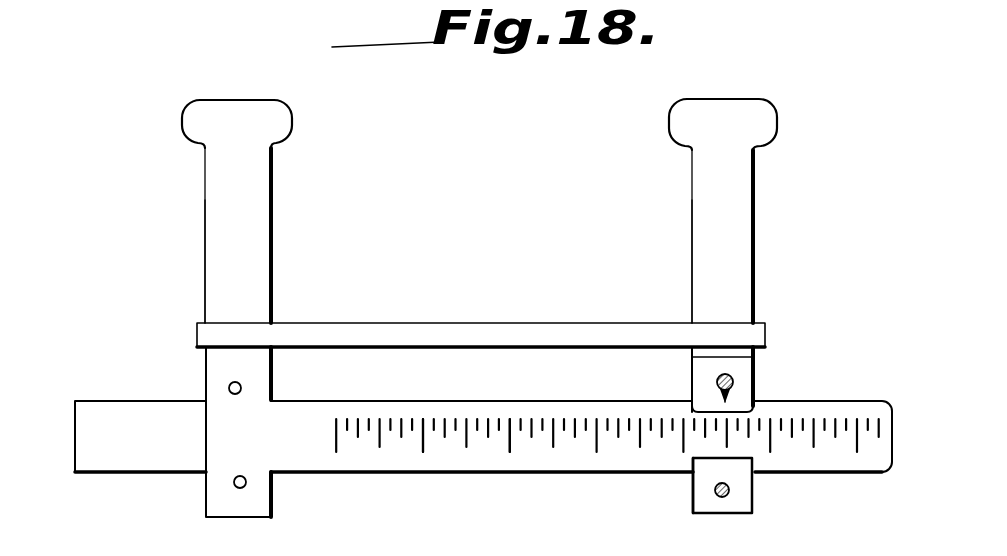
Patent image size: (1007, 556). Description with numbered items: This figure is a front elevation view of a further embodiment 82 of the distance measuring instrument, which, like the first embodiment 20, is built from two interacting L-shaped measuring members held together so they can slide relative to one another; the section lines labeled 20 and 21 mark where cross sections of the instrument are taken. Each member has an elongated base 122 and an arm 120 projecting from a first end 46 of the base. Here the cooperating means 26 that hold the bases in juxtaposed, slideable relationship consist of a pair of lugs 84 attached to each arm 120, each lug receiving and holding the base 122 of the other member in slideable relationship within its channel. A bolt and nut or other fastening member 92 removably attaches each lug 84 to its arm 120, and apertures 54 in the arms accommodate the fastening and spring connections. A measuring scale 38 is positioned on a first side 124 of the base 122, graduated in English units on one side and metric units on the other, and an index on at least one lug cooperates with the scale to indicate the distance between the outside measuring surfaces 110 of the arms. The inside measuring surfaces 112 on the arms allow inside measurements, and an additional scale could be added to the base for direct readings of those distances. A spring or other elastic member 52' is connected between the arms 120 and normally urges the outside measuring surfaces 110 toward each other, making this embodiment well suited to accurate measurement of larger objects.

The first embodiment 20 is at (45, 58).
The section line 21 is at (623, 218).
The inside measuring surface 112 is at (184, 135).
The outside measuring surface 110 is at (293, 130).
The arm 120 is at (266, 270).
The spring or other elastic member 52' is at (481, 310).
The first end of base 46 is at (228, 428).
The measuring scale 38 is at (510, 447).
The first side of base 124 is at (378, 460).
The base 122 is at (467, 462).
The lug 84 is at (742, 378).
The aperture 54 is at (757, 490).
The cooperating means 26 is at (705, 468).
The fastening member 92 is at (240, 385).
The fifth embodiment of the instrument 82 is at (850, 218).